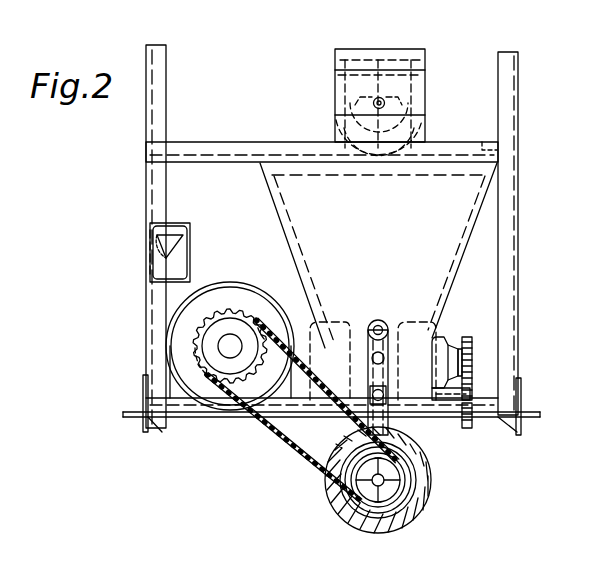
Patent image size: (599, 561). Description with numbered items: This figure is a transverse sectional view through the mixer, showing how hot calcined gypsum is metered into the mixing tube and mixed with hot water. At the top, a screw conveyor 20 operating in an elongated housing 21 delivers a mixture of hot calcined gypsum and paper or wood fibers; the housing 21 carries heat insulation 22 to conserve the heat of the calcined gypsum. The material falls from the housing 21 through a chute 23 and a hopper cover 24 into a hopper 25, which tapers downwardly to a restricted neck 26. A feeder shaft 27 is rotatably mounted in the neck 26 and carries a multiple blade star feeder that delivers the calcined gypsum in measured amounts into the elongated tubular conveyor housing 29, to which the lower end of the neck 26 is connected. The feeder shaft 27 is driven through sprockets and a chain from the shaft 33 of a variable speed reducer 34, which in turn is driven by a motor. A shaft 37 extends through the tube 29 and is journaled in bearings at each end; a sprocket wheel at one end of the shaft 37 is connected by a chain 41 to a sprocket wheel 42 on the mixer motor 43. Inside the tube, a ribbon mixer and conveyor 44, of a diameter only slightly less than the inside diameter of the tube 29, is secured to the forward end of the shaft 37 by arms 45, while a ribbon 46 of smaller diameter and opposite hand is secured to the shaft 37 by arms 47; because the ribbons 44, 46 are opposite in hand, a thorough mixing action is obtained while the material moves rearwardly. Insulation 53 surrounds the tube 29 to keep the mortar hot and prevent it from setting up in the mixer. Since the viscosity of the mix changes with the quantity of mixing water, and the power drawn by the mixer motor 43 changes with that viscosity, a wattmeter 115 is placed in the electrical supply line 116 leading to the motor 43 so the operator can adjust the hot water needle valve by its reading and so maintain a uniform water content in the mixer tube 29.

The screw conveyor 20 is at (385, 101).
The elongated housing 21 is at (420, 80).
The heat insulation 22 is at (402, 48).
The chute 23 is at (416, 136).
The hopper cover 24 is at (520, 150).
The hopper 25 is at (446, 236).
The restricted neck 26 is at (446, 338).
The feeder shaft 27 is at (471, 400).
The tubular conveyor housing 29 is at (424, 498).
The shaft 33 is at (473, 360).
The variable speed reducer 34 is at (460, 338).
The shaft 37 is at (383, 487).
The chain 41 is at (303, 458).
The sprocket wheel 42 is at (224, 367).
The mixer motor 43 is at (252, 284).
The ribbon mixer and conveyor 44 is at (408, 491).
The arms 45 is at (402, 473).
The ribbon 46 is at (346, 507).
The arms 47 is at (377, 500).
The insulation 53 is at (326, 492).
The wattmeter 115 is at (183, 222).
The electrical supply line 116 is at (158, 310).